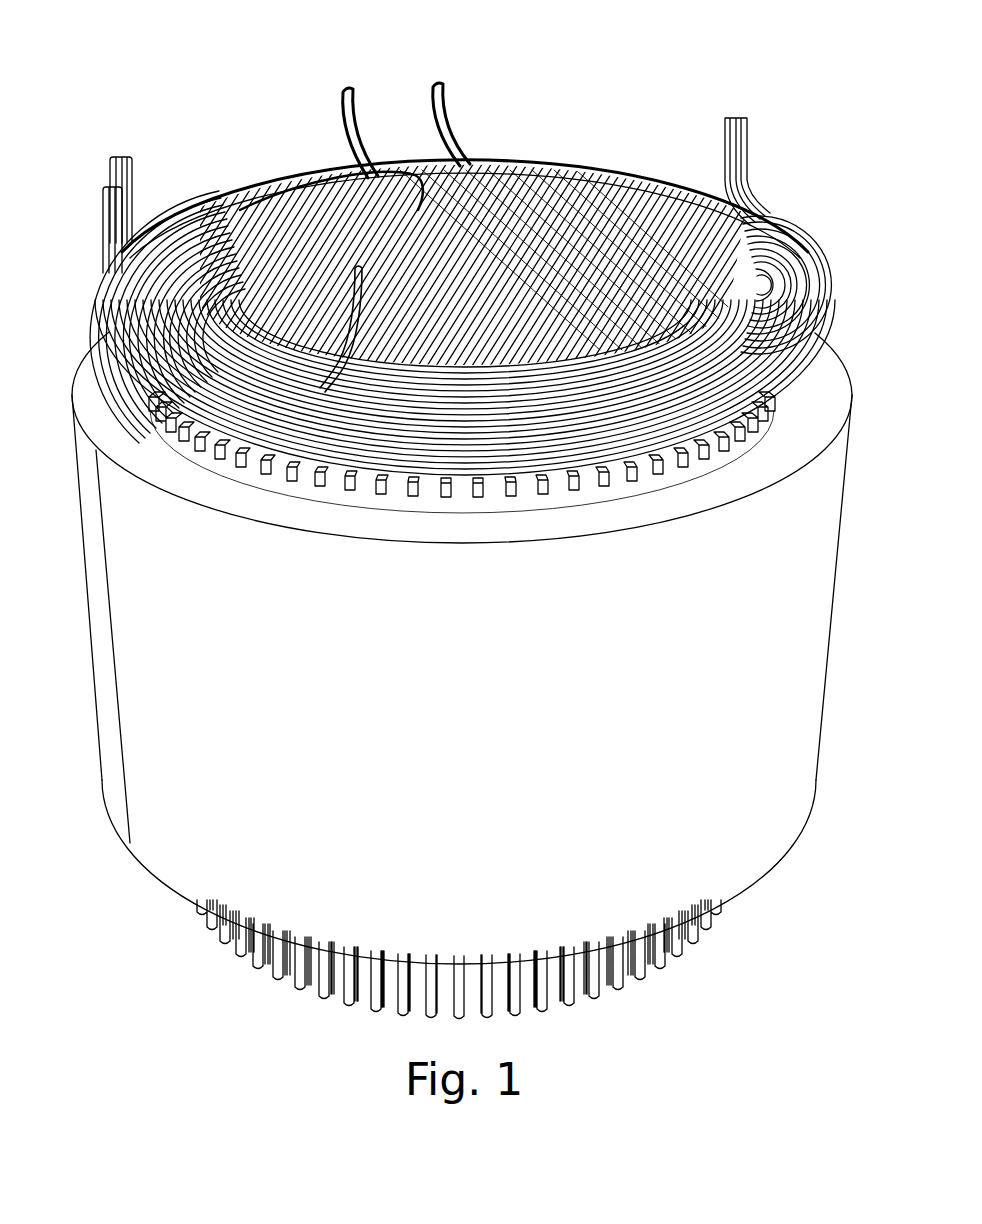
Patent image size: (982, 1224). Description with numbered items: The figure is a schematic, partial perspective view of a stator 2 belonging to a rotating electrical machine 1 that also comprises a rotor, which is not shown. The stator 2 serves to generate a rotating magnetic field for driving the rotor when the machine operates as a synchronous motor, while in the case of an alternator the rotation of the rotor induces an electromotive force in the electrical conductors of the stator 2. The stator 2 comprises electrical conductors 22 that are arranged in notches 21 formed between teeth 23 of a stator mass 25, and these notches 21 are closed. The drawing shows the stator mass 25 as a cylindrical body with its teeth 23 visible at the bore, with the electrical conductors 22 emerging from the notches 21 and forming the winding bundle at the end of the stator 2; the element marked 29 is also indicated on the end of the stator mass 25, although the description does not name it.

The rotating electrical machine 1 is at (456, 510).
The stator 2 is at (307, 152).
The notches 21 is at (462, 705).
The electrical conductors 22 is at (137, 182).
The teeth 23 is at (465, 503).
The stator mass 25 is at (648, 542).
The core end face 29 is at (238, 493).